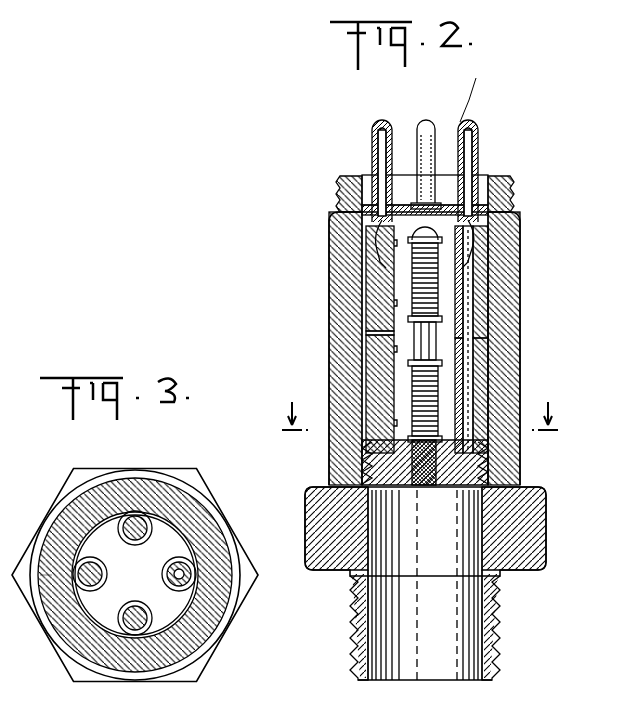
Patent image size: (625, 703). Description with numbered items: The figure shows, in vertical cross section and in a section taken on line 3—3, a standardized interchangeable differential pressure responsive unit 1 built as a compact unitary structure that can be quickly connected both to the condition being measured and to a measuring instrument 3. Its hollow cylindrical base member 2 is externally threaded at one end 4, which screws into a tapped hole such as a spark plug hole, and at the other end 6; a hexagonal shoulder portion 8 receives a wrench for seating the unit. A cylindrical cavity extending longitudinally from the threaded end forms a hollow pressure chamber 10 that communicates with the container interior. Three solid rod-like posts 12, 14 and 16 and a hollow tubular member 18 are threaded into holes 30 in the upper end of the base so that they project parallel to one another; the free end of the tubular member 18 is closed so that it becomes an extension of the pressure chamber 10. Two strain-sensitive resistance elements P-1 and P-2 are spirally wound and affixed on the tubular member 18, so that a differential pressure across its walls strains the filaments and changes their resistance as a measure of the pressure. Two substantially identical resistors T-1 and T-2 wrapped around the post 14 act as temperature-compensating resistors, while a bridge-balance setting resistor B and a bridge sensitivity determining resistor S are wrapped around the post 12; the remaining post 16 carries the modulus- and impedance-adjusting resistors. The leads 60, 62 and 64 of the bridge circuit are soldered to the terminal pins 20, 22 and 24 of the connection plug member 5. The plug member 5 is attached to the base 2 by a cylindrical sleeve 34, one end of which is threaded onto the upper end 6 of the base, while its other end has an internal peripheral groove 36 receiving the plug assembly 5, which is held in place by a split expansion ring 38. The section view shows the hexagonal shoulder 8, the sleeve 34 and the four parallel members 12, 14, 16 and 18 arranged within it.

In FIG. 2, the pressure responsive unit 1 is at (311, 307).
In FIG. 2, the base member 2 is at (488, 674).
In FIG. 3, the base member 2 is at (217, 522).
In FIG. 2, the measuring instrument 3 is at (417, 423).
In FIG. 2, the threaded end 4 is at (500, 612).
In FIG. 2, the connection plug member 5 is at (468, 112).
In FIG. 2, the upper threaded end 6 is at (356, 450).
In FIG. 2, the hexagonal shoulder portion 8 is at (522, 534).
In FIG. 3, the hexagonal shoulder portion 8 is at (178, 473).
In FIG. 2, the pressure chamber 10 is at (443, 572).
In FIG. 2, the post 12 is at (416, 340).
In FIG. 3, the post 12 is at (122, 534).
In FIG. 2, the post 14 is at (376, 336).
In FIG. 3, the post 14 is at (85, 588).
In FIG. 3, the post 16 is at (147, 612).
In FIG. 2, the tubular member 18 is at (482, 346).
In FIG. 3, the tubular member 18 is at (181, 560).
In FIG. 2, the terminal pin 20 is at (377, 165).
In FIG. 2, the terminal pin 22 is at (471, 162).
In FIG. 2, the terminal pin 24 is at (419, 145).
In FIG. 2, the holes 30 is at (398, 486).
In FIG. 2, the cylindrical sleeve 34 is at (505, 250).
In FIG. 3, the cylindrical sleeve 34 is at (91, 492).
In FIG. 2, the internal peripheral groove 36 is at (504, 196).
In FIG. 2, the split expansion ring 38 is at (346, 196).
In FIG. 2, the lead 60 is at (374, 172).
In FIG. 2, the lead 62 is at (472, 168).
In FIG. 2, the lead 64 is at (403, 195).
In FIG. 2, the bridge-balance setting resistor B is at (426, 296).
In FIG. 2, the bridge sensitivity determining resistor S is at (428, 410).
In FIG. 2, the temperature-compensating resistor T-1 is at (378, 258).
In FIG. 2, the temperature-compensating resistor T-2 is at (378, 382).
In FIG. 2, the strain-sensitive resistance element P-1 is at (485, 282).
In FIG. 2, the strain-sensitive resistance element P-2 is at (485, 396).